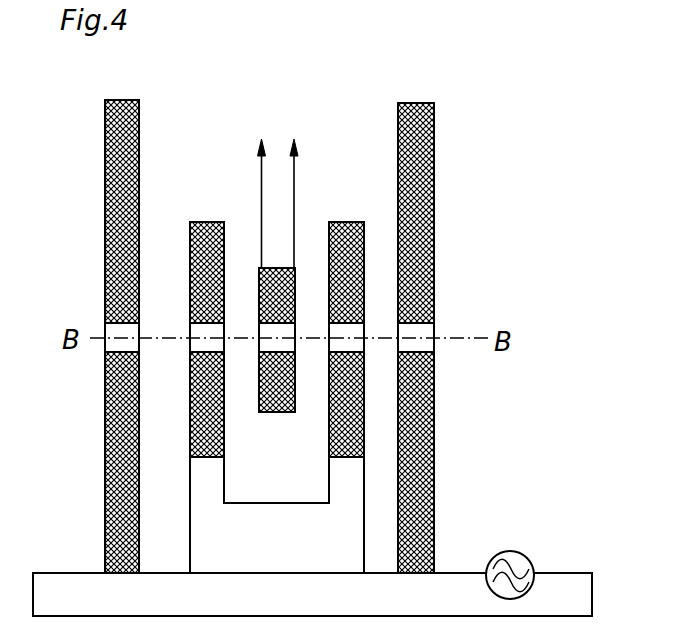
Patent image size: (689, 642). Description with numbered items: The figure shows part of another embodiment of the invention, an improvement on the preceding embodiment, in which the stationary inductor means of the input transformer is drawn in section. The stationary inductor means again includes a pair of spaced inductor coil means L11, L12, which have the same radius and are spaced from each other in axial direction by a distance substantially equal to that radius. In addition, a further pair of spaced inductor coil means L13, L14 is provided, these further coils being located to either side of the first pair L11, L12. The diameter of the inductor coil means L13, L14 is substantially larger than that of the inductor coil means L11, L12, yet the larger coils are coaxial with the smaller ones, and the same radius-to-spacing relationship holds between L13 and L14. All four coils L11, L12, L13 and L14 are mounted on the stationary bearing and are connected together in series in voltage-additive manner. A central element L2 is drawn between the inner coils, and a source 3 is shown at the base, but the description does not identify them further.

The inductor coil means L13 is at (118, 99).
The inductor coil means L11 is at (189, 228).
The central electrode L2 is at (260, 268).
The inductor coil means L12 is at (346, 228).
The inductor coil means L14 is at (412, 112).
The AC voltage source 3 is at (507, 560).